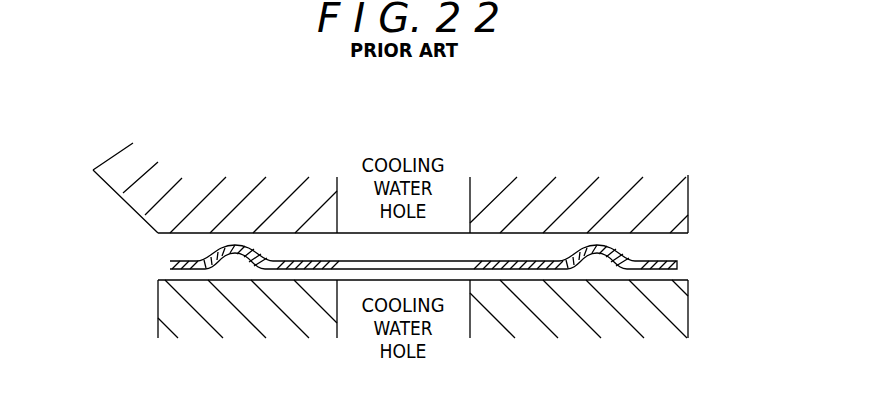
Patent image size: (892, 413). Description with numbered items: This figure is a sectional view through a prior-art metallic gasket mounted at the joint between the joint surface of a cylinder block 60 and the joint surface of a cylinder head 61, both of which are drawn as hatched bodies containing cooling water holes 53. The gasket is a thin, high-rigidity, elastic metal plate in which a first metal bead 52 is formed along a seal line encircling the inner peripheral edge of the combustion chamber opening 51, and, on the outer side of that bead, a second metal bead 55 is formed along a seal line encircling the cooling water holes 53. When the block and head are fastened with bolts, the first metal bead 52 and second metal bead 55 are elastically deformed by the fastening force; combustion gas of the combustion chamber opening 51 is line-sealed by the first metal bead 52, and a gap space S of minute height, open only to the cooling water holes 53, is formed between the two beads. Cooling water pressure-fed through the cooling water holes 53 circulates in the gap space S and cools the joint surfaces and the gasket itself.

The combustion chamber opening 51 is at (170, 263).
The first metal bead 52 is at (235, 243).
The cooling water hole 53 is at (338, 268).
The second metal bead 55 is at (600, 243).
The cylinder block 60 is at (673, 310).
The cylinder head 61 is at (672, 200).
The gap space S is at (520, 256).